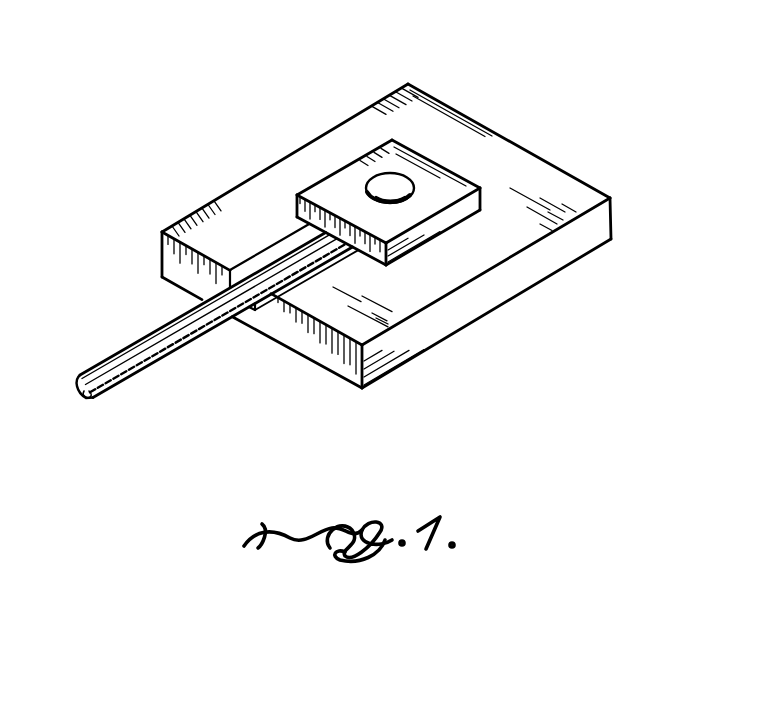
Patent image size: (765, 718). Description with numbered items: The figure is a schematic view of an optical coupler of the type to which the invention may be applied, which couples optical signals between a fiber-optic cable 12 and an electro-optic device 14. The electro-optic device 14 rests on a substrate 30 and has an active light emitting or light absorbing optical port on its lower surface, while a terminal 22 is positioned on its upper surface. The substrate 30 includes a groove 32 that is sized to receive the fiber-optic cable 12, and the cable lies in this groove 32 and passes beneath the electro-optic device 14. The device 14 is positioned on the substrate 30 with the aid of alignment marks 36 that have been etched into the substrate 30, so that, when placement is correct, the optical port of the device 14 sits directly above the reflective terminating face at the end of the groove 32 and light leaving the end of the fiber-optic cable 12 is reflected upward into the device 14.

The fiber-optic cable 12 is at (138, 368).
The electro-optic device 14 is at (318, 187).
The terminal 22 is at (388, 173).
The substrate 30 is at (457, 319).
The groove 32 is at (277, 300).
The alignment marks 36 is at (329, 169).